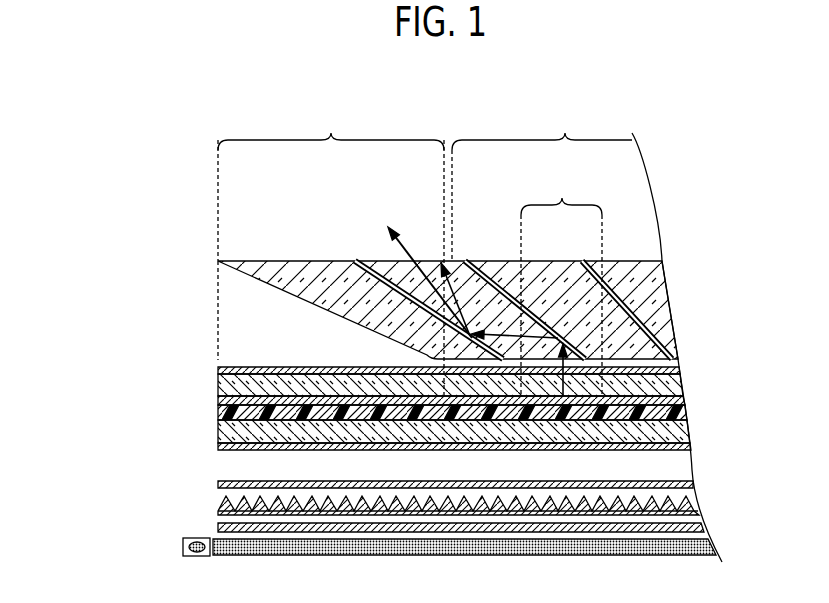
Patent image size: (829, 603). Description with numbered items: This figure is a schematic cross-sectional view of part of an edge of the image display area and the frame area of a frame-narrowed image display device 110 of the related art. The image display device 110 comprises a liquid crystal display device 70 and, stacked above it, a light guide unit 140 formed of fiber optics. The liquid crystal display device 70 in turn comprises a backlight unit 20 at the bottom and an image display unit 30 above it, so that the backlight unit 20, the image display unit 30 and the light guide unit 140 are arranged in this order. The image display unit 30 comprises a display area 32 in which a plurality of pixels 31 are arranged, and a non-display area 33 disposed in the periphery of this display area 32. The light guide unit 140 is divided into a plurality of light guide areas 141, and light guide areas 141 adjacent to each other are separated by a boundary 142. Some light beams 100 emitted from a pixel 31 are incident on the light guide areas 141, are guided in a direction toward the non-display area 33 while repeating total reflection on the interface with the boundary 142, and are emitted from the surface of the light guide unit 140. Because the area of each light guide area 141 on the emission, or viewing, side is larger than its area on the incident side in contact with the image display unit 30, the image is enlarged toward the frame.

The image display device 110 is at (147, 154).
The light guide unit 140 is at (173, 261).
The boundary 142 is at (357, 262).
The light guide area 141 is at (388, 262).
The non-display area 33 is at (331, 245).
The display area 32 is at (542, 177).
The pixel 31 is at (561, 277).
The light beam 100 is at (558, 338).
The liquid crystal display device 70 is at (118, 368).
The image display unit 30 is at (173, 368).
The backlight unit 20 is at (173, 482).